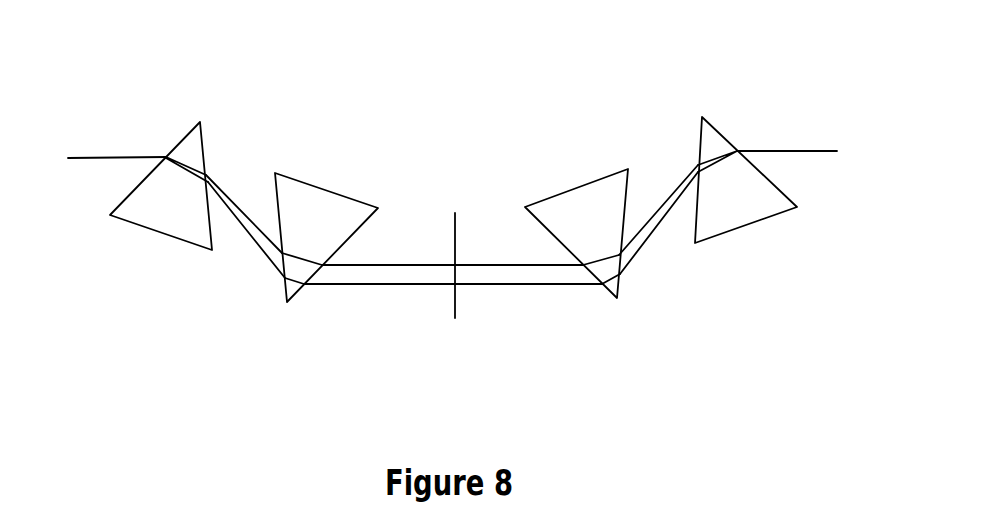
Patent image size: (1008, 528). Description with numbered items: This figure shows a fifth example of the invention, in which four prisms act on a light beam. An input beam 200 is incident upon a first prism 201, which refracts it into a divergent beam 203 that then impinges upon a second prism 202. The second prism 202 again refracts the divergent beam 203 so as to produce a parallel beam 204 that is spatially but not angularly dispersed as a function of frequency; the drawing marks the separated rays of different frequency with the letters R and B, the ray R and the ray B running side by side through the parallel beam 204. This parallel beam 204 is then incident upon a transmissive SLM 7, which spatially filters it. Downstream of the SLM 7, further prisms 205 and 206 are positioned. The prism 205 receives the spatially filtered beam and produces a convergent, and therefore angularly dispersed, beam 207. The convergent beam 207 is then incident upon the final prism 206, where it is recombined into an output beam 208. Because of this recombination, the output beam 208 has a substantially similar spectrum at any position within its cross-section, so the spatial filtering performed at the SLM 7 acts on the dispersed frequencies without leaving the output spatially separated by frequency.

The input beam 200 is at (123, 157).
The first prism 201 is at (123, 222).
The second prism 202 is at (298, 180).
The divergent beam 203 is at (260, 252).
The parallel beam 204 is at (342, 287).
The third prism 205 is at (597, 178).
The final prism 206 is at (712, 123).
The convergent beam 207 is at (638, 252).
The output beam 208 is at (815, 152).
The transmissive SLM 7 is at (456, 306).
The red light ray R is at (215, 178).
The blue light ray B is at (240, 223).